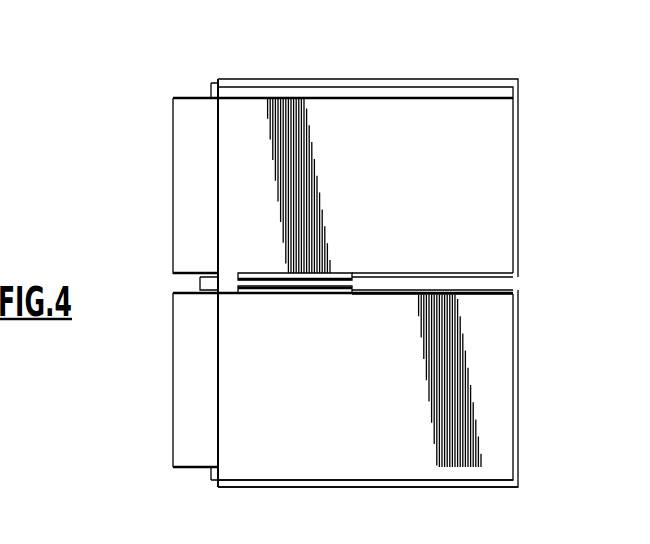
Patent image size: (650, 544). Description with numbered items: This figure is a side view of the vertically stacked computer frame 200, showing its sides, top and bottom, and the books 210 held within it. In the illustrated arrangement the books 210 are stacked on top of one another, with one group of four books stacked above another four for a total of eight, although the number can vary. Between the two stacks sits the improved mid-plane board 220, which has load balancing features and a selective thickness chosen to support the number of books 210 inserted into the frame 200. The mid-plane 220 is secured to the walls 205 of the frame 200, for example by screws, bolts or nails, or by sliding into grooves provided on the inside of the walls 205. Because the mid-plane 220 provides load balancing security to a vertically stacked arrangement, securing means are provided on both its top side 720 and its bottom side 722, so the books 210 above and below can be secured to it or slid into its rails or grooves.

The frame 200 is at (362, 79).
The books 210 is at (173, 160).
The top side of mid-plane 720 is at (238, 275).
The bottom side of mid-plane 722 is at (238, 290).
The mid-plane board 220 is at (508, 283).
The walls of the frame 205 is at (218, 450).